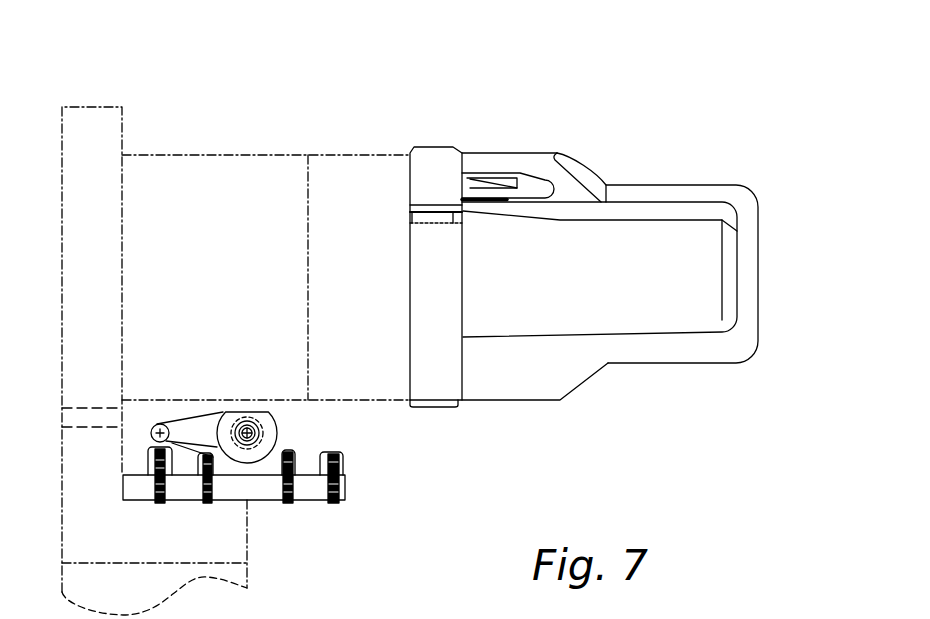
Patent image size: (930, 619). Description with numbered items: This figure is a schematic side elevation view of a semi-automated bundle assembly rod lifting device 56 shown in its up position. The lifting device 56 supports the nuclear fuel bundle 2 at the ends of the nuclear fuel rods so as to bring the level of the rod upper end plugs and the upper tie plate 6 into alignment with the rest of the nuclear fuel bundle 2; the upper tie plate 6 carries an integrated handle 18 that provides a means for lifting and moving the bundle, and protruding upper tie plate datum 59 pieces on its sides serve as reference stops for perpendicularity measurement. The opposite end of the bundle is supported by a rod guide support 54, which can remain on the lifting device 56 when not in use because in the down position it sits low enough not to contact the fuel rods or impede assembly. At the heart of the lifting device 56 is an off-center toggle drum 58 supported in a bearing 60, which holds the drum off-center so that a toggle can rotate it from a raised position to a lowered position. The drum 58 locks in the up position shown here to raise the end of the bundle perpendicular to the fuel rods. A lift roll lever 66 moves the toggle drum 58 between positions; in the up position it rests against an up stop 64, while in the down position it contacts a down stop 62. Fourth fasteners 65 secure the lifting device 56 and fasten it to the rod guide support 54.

The nuclear fuel bundle 2 is at (258, 146).
The upper tie plate 6 is at (432, 380).
The handle 18 is at (742, 198).
The rod guide support 54 is at (87, 120).
The semi-automated bundle assembly rod lifting device 56 is at (346, 484).
The off-center toggle drum 58 is at (248, 410).
The upper tie plate datum 59 is at (432, 147).
The bearing 60 is at (265, 435).
The down stop 62 is at (346, 462).
The up stop 64 is at (150, 445).
The fourth fasteners 65 is at (160, 503).
The lift roll lever 66 is at (188, 428).